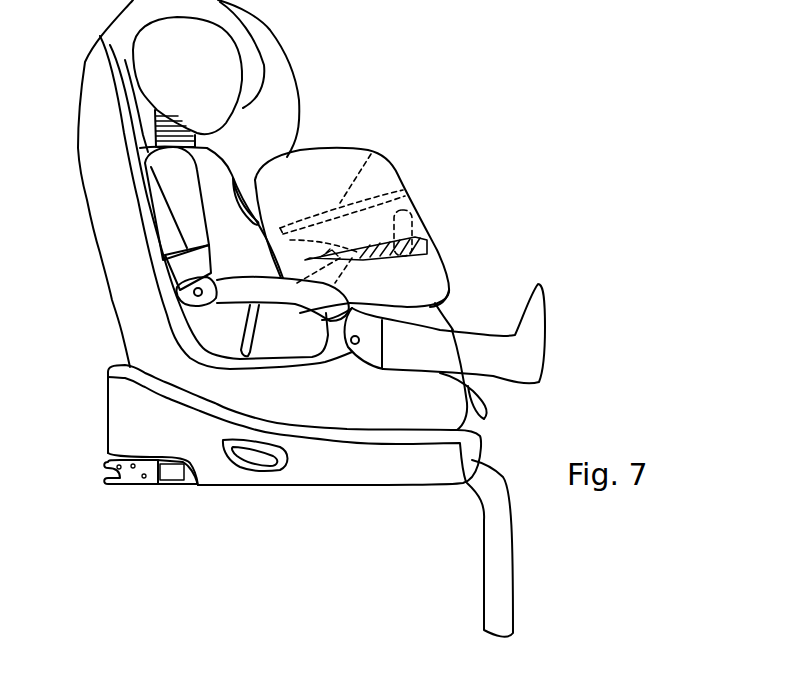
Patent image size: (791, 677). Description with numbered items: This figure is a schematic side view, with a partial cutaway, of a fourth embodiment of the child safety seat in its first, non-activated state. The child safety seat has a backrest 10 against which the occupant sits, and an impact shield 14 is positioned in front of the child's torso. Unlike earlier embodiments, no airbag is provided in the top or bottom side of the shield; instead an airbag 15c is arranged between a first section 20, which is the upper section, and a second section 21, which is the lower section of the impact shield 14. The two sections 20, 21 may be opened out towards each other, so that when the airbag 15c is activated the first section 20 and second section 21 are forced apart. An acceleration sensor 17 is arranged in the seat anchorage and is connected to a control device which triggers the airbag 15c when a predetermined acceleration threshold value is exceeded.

The backrest 10 is at (160, 317).
The impact shield 14 is at (373, 218).
The airbag 15c is at (412, 243).
The acceleration sensor 17 is at (153, 487).
The first section 20 is at (328, 173).
The second section 21 is at (423, 270).